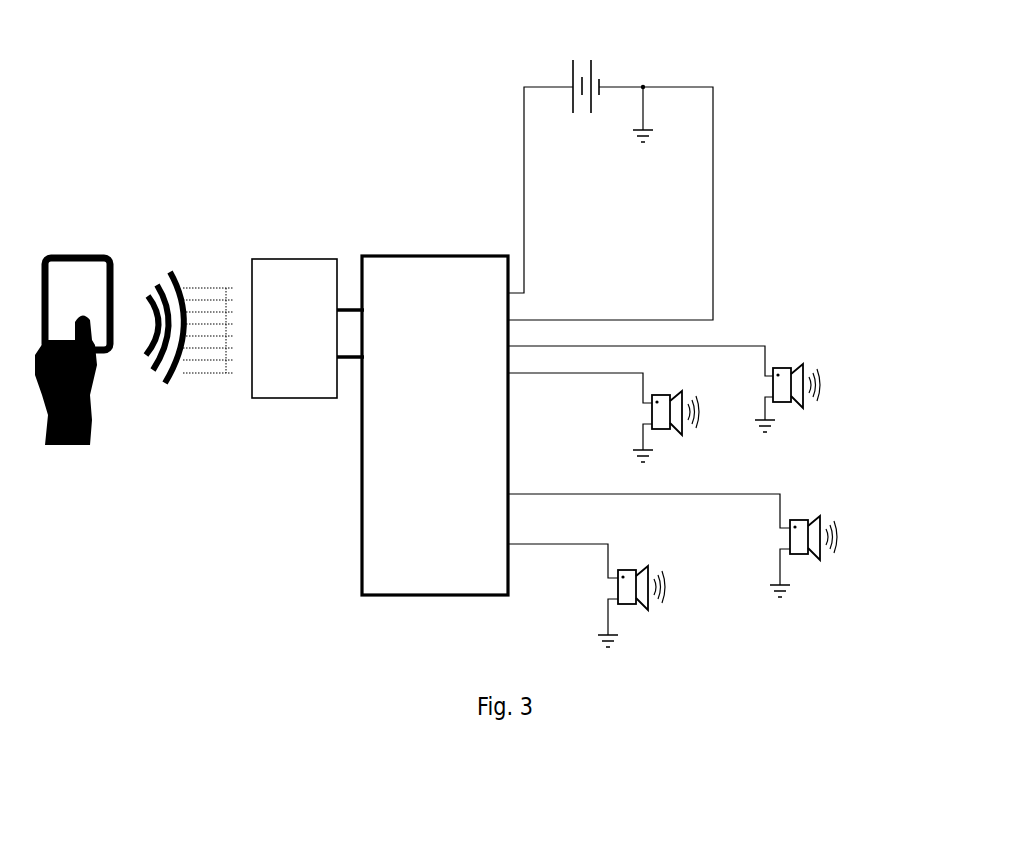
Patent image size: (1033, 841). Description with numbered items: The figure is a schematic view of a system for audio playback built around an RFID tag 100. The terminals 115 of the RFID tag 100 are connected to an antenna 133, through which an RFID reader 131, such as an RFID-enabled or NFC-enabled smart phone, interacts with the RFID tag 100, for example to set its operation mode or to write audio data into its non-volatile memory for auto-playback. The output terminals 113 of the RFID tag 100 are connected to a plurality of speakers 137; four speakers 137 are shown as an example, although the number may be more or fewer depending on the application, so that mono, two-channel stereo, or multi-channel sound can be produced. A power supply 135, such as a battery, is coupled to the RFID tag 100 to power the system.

The RFID tag 100 is at (436, 420).
The output terminals 113 is at (512, 375).
The terminals 115 is at (350, 356).
The RFID reader 131 is at (70, 257).
The antenna 133 is at (273, 258).
The power supply 135 is at (600, 70).
The speakers 137 is at (701, 392).